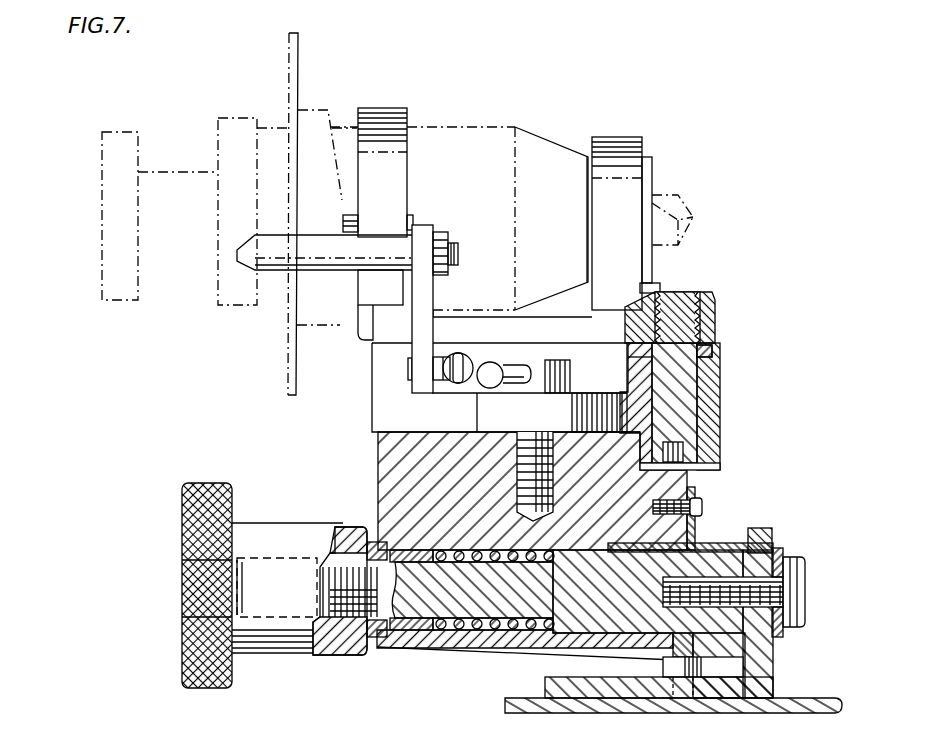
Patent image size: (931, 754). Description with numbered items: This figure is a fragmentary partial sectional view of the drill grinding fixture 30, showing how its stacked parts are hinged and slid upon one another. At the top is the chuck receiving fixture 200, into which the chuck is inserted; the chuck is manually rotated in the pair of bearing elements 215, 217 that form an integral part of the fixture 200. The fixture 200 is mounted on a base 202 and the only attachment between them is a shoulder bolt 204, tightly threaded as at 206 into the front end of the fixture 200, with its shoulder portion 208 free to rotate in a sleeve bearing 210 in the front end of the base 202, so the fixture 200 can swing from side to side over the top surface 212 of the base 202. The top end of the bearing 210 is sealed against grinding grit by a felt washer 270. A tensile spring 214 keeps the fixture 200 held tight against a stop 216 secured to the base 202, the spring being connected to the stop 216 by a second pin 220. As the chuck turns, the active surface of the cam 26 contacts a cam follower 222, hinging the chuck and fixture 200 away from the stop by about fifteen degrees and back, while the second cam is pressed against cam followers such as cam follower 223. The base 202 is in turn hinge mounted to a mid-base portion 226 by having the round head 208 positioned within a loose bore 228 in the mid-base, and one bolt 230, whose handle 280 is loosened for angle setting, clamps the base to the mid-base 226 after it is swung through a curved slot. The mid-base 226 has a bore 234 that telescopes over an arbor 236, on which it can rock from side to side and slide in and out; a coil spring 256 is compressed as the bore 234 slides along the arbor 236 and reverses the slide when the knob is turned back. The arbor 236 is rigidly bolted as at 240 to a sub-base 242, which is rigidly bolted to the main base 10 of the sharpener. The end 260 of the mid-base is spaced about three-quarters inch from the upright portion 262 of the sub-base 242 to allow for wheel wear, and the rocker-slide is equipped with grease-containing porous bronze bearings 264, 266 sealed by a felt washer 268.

The main base 10 is at (583, 706).
The cam 26 is at (287, 370).
The drill grinding fixture 30 is at (148, 438).
The chuck receiving fixture 200 is at (618, 131).
The base 202 is at (380, 381).
The shoulder bolt 204 is at (673, 308).
The threaded connection 206 is at (690, 320).
The shoulder portion 208 is at (697, 450).
The sleeve bearing 210 is at (700, 402).
The top surface 212 is at (373, 338).
The tensile spring 214 is at (450, 390).
The bearing element 215 is at (402, 192).
The stop 216 is at (425, 310).
The bearing element 217 is at (637, 232).
The second pin 220 is at (425, 340).
The cam follower 222 is at (275, 260).
The cam follower 223 is at (343, 222).
The mid-base portion 226 is at (398, 473).
The loose bore 228 is at (718, 466).
The bolt 230 is at (558, 436).
The bore 234 is at (560, 622).
The arbor 236 is at (720, 552).
The bolt 240 is at (743, 668).
The sub-base 242 is at (727, 690).
The coil spring 256 is at (456, 630).
The end of the mid-base 260 is at (702, 520).
The upright portion 262 is at (772, 540).
The porous bronze bearing 264 is at (628, 648).
The porous bronze bearing 266 is at (390, 645).
The felt washer 268 is at (693, 645).
The felt washer 270 is at (697, 353).
The handle 280 is at (500, 365).